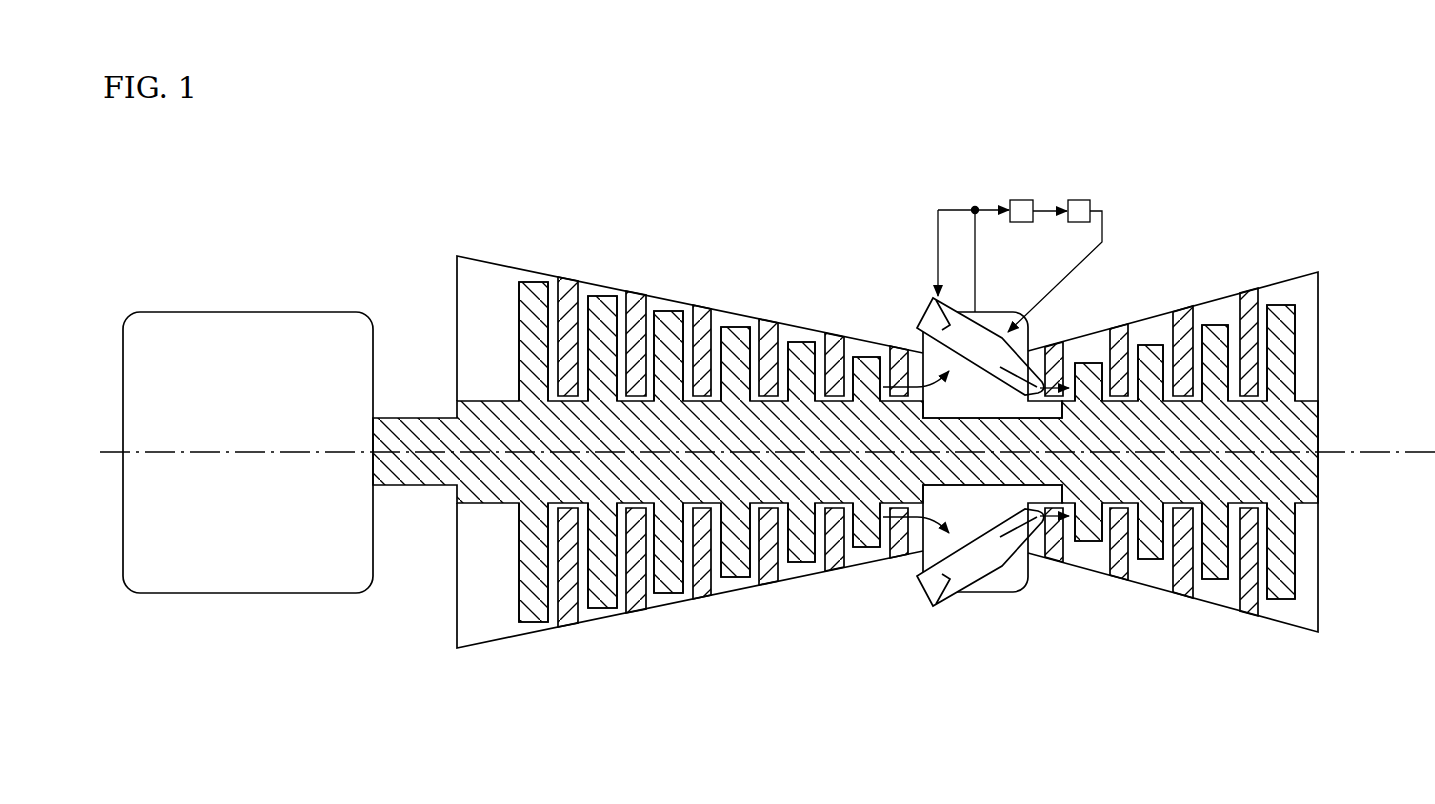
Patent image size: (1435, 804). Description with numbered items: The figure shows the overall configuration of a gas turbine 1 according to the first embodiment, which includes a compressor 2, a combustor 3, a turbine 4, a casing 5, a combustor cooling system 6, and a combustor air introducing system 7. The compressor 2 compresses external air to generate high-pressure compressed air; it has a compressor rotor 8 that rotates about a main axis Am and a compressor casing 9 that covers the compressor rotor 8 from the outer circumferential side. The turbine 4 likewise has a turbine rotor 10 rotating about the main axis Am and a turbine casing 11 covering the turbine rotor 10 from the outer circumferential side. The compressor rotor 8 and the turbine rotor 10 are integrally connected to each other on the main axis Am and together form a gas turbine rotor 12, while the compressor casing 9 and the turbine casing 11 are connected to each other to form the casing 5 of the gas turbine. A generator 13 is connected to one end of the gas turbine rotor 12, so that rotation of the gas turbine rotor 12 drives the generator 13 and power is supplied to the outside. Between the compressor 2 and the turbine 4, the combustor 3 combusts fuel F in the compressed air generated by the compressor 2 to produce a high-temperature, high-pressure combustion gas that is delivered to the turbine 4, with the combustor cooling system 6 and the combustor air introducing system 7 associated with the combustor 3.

The gas turbine 1 is at (849, 443).
The compressor 2 is at (489, 649).
The combustor 3 is at (903, 247).
The turbine 4 is at (1282, 628).
The casing 5 is at (891, 401).
The combustor cooling system 6 is at (1092, 189).
The combustor air introducing system 7 is at (936, 194).
The compressor rotor 8 is at (683, 482).
The compressor casing 9 is at (522, 268).
The turbine rotor 10 is at (1155, 490).
The turbine casing 11 is at (1283, 275).
The gas turbine rotor 12 is at (845, 446).
The generator 13 is at (245, 593).
The fuel F is at (919, 306).
The main axis Am is at (1410, 452).